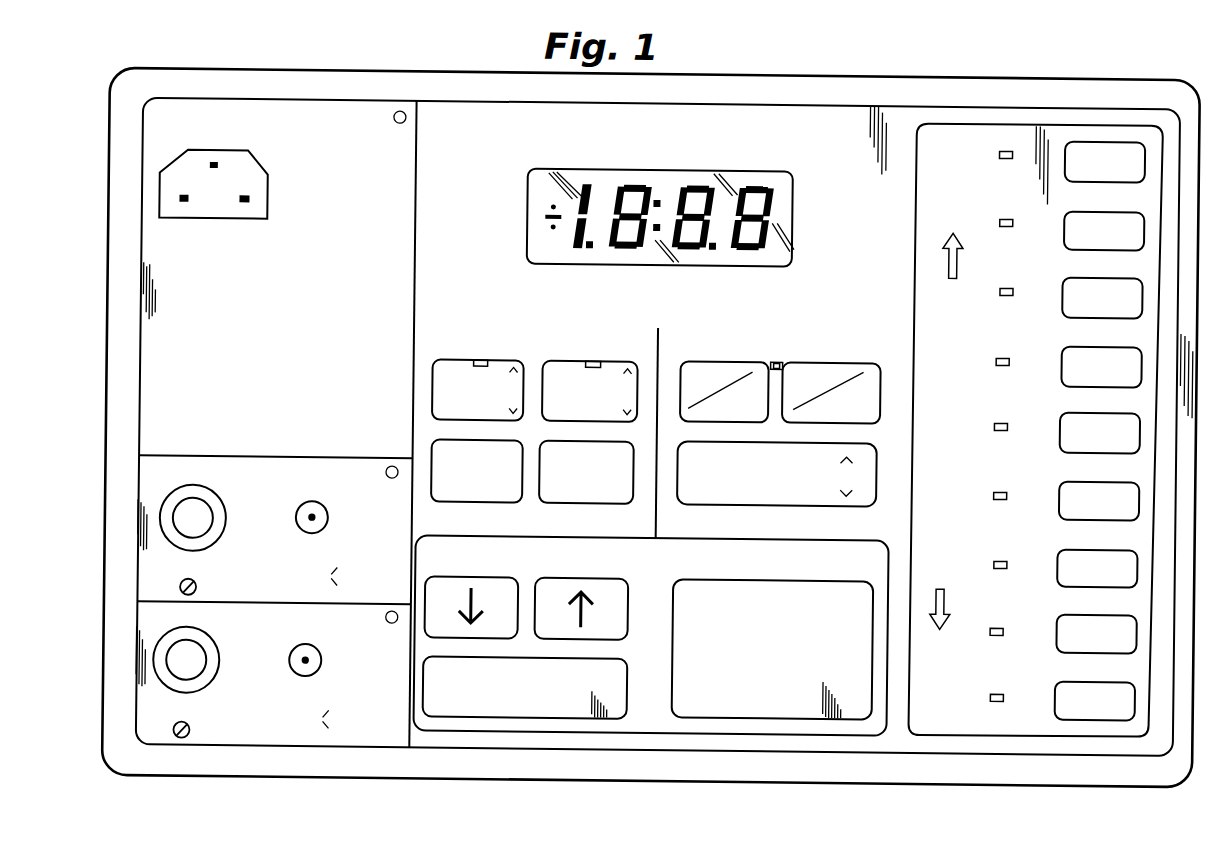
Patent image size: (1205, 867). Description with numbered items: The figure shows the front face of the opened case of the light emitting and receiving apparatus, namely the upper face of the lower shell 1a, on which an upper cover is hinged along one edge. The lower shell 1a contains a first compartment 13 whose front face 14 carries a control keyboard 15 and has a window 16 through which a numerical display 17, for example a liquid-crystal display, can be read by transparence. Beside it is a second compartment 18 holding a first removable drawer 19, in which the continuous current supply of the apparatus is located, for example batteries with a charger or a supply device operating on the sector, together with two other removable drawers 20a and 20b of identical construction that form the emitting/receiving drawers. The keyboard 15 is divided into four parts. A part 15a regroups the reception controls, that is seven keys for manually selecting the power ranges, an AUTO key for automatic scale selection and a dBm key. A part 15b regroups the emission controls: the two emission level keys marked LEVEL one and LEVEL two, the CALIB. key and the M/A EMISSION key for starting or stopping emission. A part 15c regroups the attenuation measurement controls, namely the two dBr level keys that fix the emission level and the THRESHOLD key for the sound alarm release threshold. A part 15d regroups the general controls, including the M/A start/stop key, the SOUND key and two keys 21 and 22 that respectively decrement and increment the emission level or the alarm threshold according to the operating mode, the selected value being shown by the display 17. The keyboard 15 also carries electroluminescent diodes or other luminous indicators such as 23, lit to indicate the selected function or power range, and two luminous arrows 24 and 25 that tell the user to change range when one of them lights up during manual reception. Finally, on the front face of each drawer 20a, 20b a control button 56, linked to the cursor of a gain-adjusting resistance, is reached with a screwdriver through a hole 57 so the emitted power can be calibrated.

The lower shell 1a is at (940, 76).
The first compartment 13 is at (845, 123).
The front face 14 is at (745, 141).
The control keyboard 15 is at (830, 300).
The reception controls part 15a is at (912, 155).
The emission controls part 15b is at (443, 348).
The attenuation measurement controls part 15c is at (867, 348).
The general controls part 15d is at (893, 709).
The window 16 is at (668, 168).
The numerical display 17 is at (546, 179).
The second compartment 18 is at (330, 126).
The first removable drawer 19 is at (278, 326).
The removable drawer 20a is at (140, 670).
The removable drawer 20b is at (138, 503).
The decrementing key 21 is at (485, 578).
The incrementing key 22 is at (567, 578).
The luminous indicator 23 is at (590, 362).
The luminous arrow 24 is at (956, 252).
The luminous arrow 25 is at (947, 594).
The control button 56 is at (198, 591).
The hole 57 is at (182, 592).